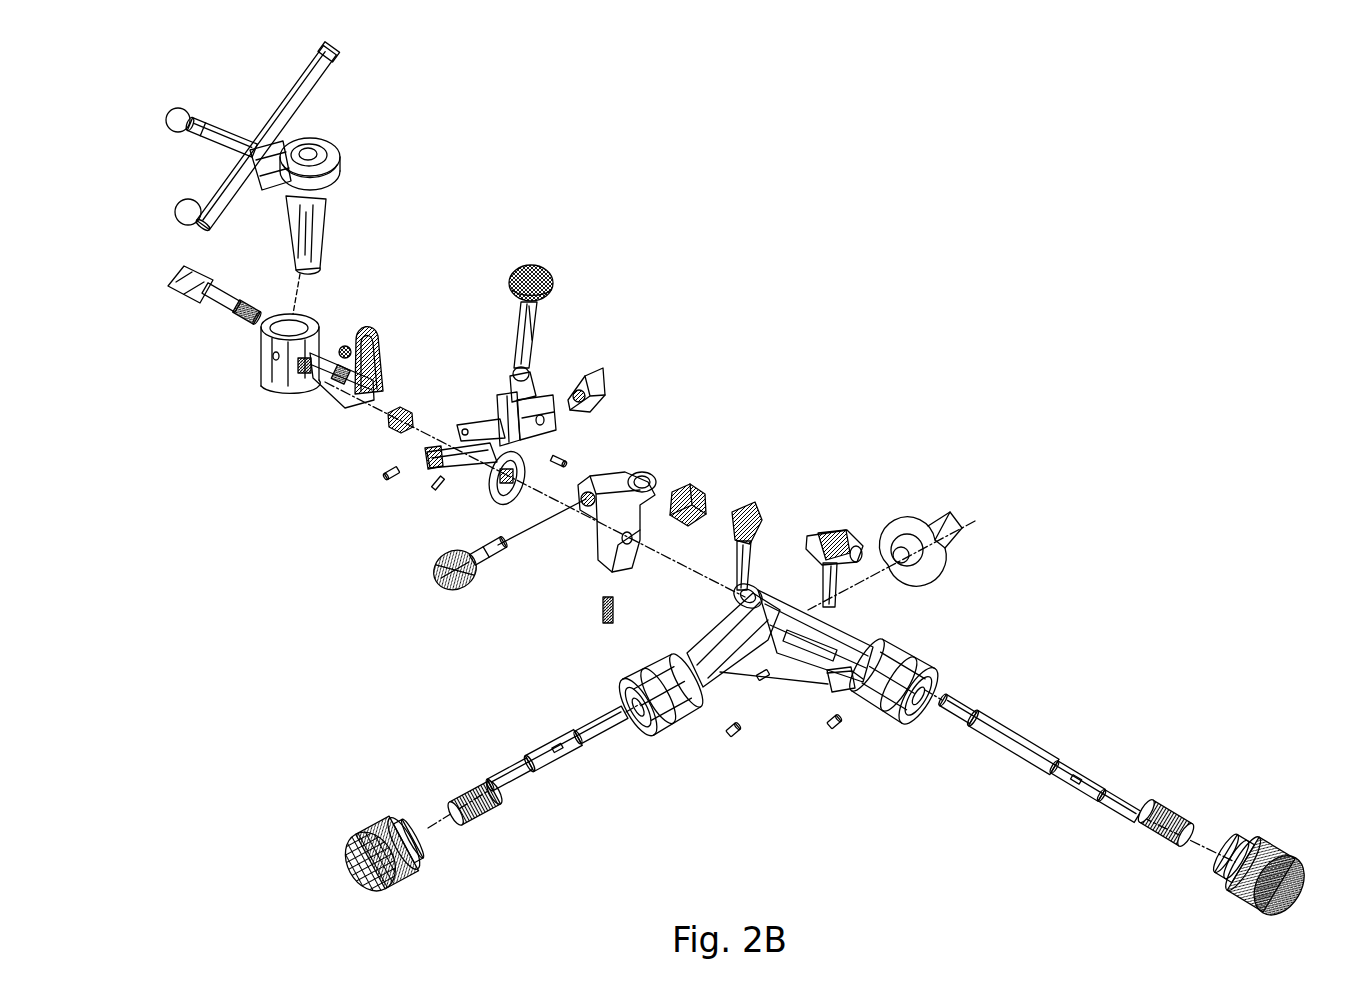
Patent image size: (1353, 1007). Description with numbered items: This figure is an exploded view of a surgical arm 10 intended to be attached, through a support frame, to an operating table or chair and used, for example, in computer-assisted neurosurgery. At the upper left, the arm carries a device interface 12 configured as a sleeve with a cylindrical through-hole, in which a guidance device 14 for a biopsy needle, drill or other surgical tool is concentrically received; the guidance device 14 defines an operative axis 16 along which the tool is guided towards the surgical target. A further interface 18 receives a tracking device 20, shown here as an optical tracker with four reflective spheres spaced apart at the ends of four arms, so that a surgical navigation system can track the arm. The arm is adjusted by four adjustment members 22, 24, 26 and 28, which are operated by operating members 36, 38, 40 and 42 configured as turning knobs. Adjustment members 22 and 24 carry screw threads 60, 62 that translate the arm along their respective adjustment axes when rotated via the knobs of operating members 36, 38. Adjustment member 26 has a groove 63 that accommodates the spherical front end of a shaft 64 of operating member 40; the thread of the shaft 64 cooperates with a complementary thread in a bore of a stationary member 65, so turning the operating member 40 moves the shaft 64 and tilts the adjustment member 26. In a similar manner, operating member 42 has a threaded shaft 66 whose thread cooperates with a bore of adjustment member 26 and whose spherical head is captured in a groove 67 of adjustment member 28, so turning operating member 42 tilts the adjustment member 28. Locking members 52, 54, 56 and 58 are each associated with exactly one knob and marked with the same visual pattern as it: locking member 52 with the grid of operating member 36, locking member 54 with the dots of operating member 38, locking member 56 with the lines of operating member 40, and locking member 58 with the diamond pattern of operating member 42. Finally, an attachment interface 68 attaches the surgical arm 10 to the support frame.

The surgical arm 10 is at (888, 269).
The device interface 12 is at (238, 386).
The guidance device 14 is at (350, 156).
The operative axis 16 is at (318, 293).
The further interface 18 is at (266, 196).
The tracking device 20 is at (254, 77).
The adjustment member 22 is at (568, 735).
The adjustment member 24 is at (1030, 736).
The adjustment member 26 is at (440, 463).
The adjustment member 28 is at (335, 389).
The operating member 36 is at (360, 884).
The operating member 38 is at (1232, 882).
The operating member 40 is at (430, 567).
The operating member 42 is at (545, 265).
The locking member 52 is at (760, 507).
The locking member 54 is at (838, 534).
The locking member 56 is at (706, 499).
The locking member 58 is at (609, 390).
The screw thread 60 is at (494, 808).
The screw thread 62 is at (1188, 805).
The groove 63 is at (528, 366).
The shaft 64 is at (498, 545).
The stationary member 65 is at (648, 471).
The threaded shaft 66 is at (520, 309).
The groove 67 is at (382, 353).
The attachment interface 68 is at (972, 530).